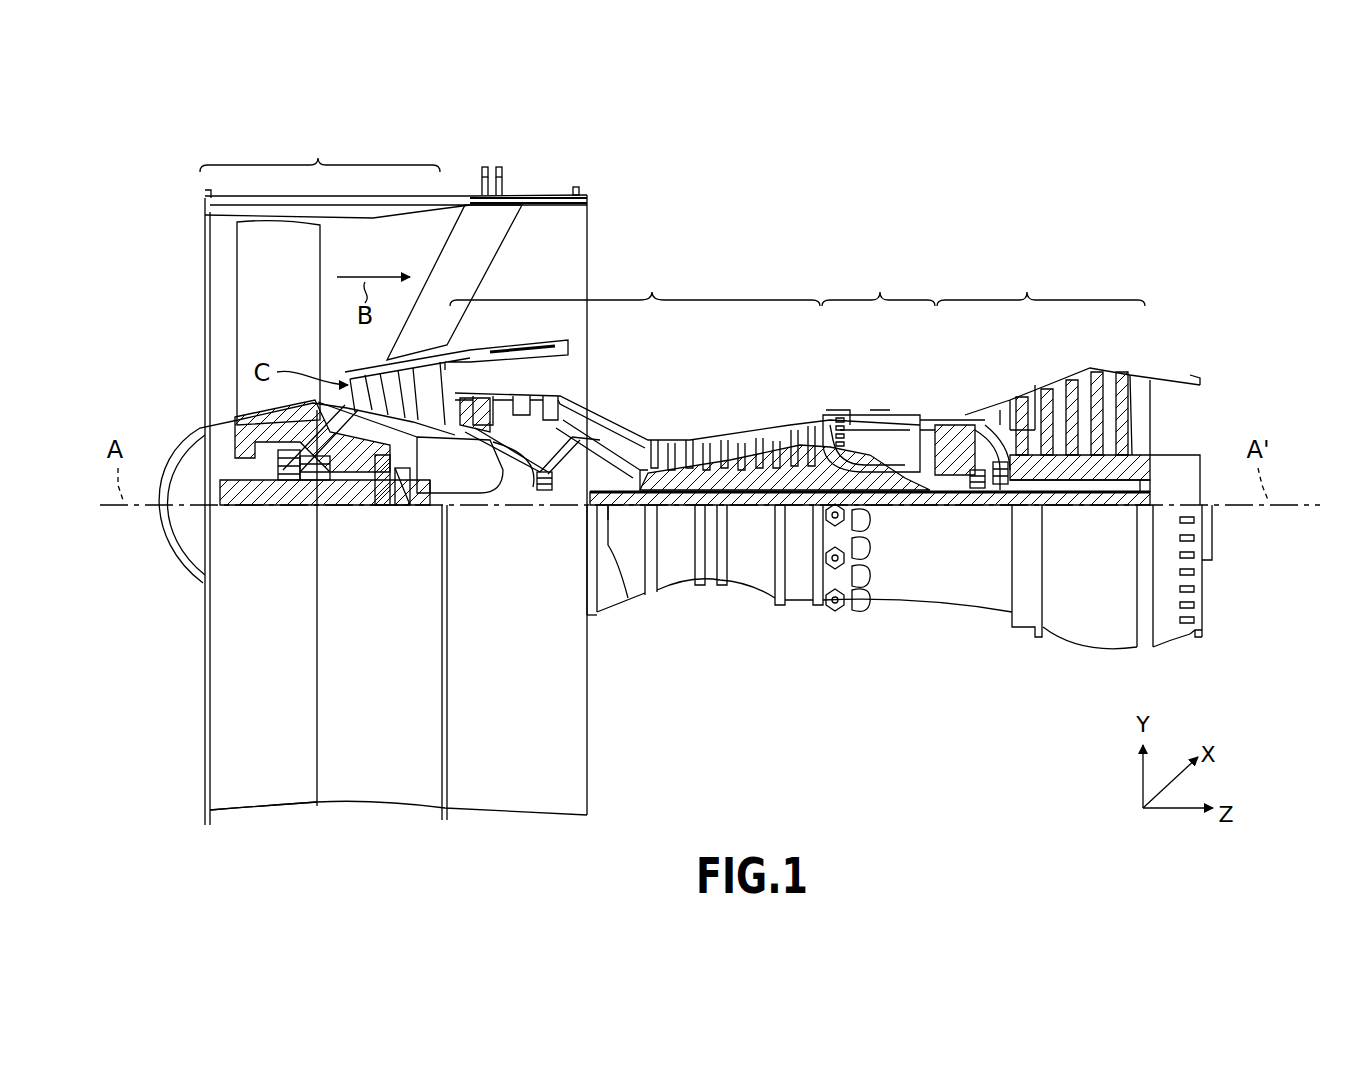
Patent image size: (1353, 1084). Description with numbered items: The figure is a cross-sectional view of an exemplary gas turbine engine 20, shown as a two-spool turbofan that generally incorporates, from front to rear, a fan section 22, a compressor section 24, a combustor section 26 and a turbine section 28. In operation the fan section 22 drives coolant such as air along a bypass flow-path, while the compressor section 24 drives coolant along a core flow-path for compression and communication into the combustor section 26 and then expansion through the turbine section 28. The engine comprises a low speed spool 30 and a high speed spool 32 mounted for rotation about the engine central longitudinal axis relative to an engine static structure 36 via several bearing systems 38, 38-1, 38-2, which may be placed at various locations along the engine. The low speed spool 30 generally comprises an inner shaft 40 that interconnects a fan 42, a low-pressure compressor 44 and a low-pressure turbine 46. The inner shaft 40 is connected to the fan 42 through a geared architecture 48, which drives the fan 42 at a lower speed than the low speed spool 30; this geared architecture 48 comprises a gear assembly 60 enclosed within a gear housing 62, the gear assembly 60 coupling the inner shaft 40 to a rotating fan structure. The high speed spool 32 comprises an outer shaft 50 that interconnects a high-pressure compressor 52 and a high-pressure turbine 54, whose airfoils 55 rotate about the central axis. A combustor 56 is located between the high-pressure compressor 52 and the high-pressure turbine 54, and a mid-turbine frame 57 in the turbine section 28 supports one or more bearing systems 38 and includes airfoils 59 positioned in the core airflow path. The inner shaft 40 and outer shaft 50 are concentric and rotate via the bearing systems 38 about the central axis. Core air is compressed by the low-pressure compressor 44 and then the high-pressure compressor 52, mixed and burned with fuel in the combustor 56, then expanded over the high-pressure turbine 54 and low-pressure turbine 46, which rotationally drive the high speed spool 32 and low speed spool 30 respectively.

The gas turbine engine 20 is at (923, 235).
The fan section 22 is at (320, 150).
The compressor section 24 is at (685, 364).
The combustor section 26 is at (878, 282).
The turbine section 28 is at (1041, 282).
The low speed spool 30 is at (755, 515).
The high speed spool 32 is at (790, 470).
The engine static structure 36 is at (368, 805).
The bearing system 38 is at (983, 505).
The bearing system 38-1 is at (292, 488).
The bearing system 38-2 is at (547, 492).
The inner shaft 40 is at (628, 560).
The fan 42 is at (262, 319).
The low-pressure compressor 44 is at (540, 392).
The low-pressure turbine 46 is at (1078, 385).
The geared architecture 48 is at (405, 515).
The outer shaft 50 is at (880, 508).
The high-pressure compressor 52 is at (738, 470).
The high-pressure turbine 54 is at (944, 428).
The airfoils 55 is at (965, 445).
The combustor 56 is at (870, 440).
The mid-turbine frame 57 is at (975, 430).
The airfoils 59 is at (1003, 410).
The gear assembly 60 is at (420, 500).
The gear housing 62 is at (408, 448).